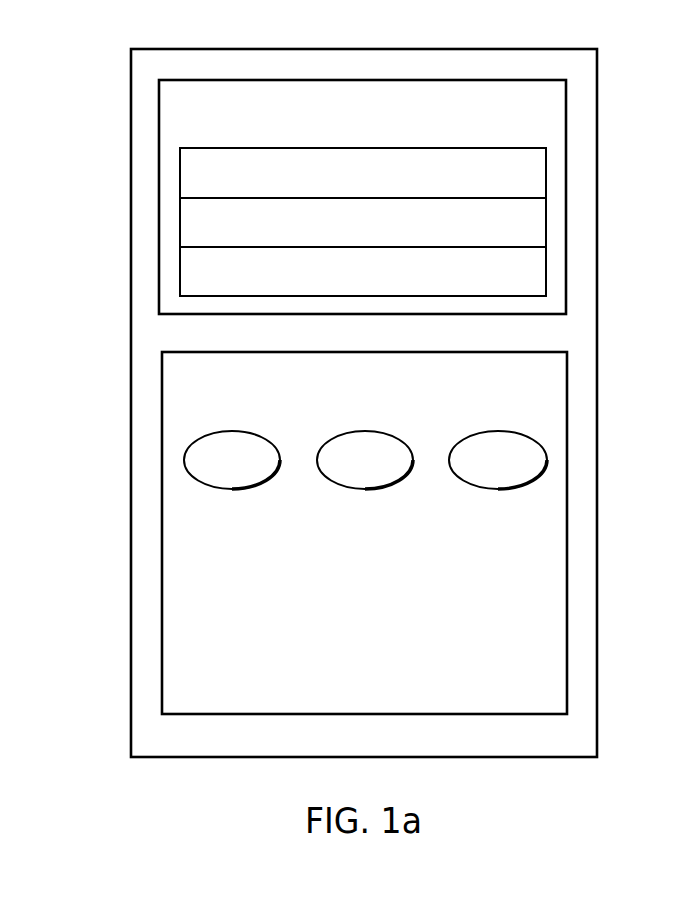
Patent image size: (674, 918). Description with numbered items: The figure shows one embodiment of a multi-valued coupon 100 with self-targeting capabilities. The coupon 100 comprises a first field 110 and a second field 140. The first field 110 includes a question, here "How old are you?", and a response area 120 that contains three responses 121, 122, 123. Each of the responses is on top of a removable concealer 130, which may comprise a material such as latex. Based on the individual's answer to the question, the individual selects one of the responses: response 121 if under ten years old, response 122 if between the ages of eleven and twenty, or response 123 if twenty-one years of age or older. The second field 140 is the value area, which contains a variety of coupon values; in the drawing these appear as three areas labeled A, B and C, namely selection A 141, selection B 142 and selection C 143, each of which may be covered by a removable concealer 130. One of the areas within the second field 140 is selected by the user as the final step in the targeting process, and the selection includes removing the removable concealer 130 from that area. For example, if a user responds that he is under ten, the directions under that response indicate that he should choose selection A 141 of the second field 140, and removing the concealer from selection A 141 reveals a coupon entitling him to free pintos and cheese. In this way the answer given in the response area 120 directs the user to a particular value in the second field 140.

The coupon 100 is at (559, 65).
The first field 110 is at (422, 108).
The response area 120 is at (530, 178).
The response 121 is at (192, 173).
The response 122 is at (192, 222).
The response 123 is at (192, 275).
The removable concealer 130 is at (527, 268).
The second field 140 is at (532, 660).
The selection A 141 is at (230, 473).
The selection B 142 is at (367, 473).
The selection C 143 is at (495, 475).